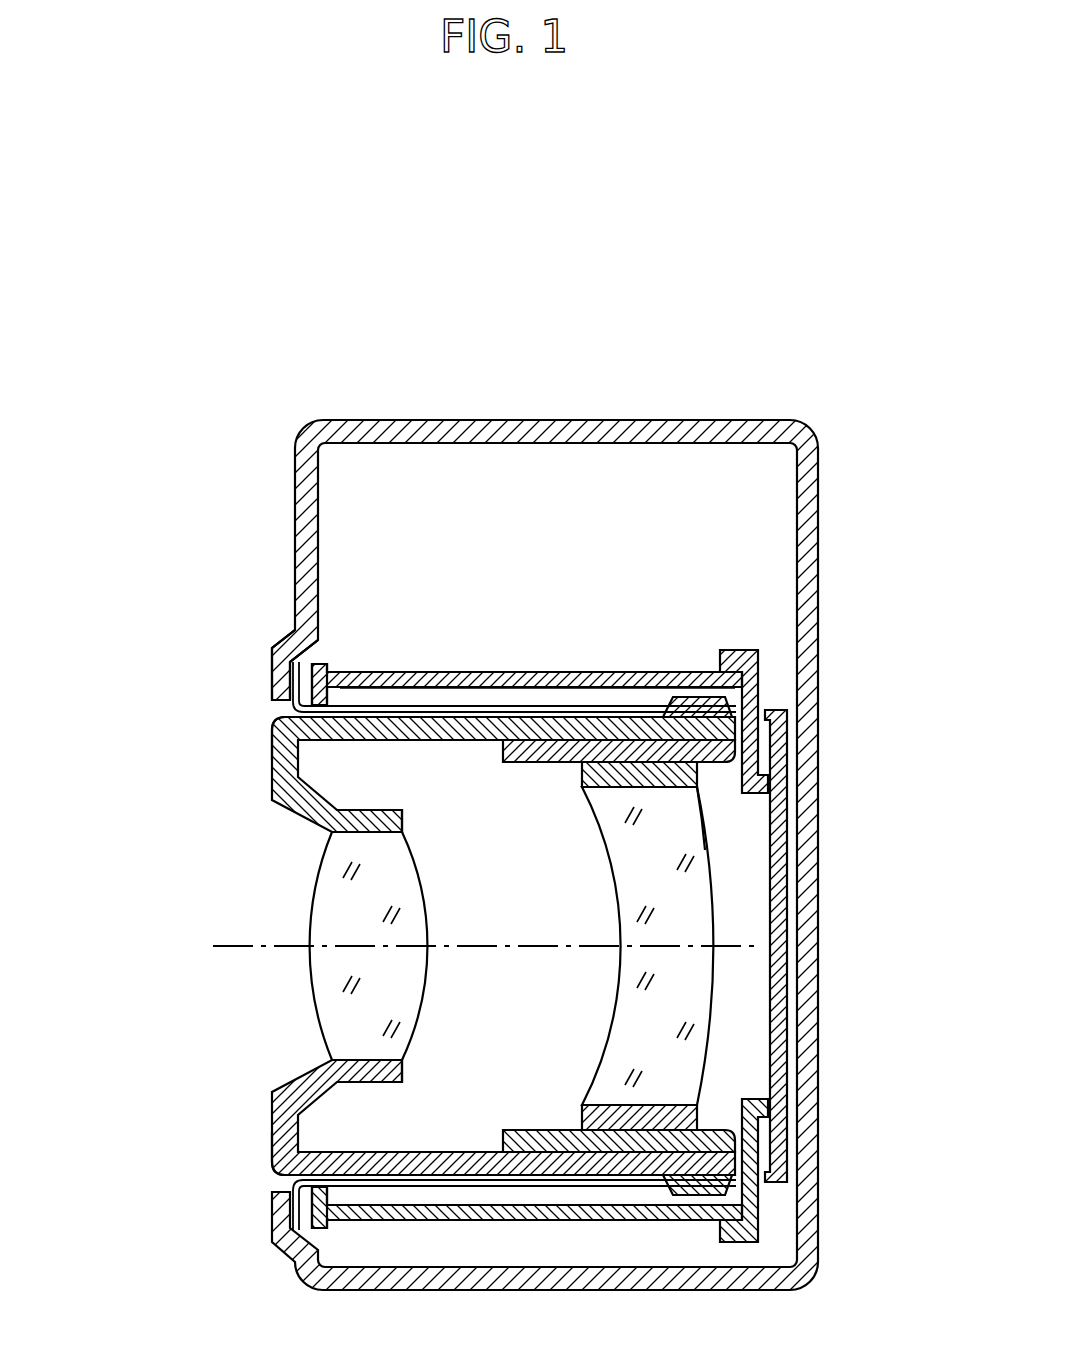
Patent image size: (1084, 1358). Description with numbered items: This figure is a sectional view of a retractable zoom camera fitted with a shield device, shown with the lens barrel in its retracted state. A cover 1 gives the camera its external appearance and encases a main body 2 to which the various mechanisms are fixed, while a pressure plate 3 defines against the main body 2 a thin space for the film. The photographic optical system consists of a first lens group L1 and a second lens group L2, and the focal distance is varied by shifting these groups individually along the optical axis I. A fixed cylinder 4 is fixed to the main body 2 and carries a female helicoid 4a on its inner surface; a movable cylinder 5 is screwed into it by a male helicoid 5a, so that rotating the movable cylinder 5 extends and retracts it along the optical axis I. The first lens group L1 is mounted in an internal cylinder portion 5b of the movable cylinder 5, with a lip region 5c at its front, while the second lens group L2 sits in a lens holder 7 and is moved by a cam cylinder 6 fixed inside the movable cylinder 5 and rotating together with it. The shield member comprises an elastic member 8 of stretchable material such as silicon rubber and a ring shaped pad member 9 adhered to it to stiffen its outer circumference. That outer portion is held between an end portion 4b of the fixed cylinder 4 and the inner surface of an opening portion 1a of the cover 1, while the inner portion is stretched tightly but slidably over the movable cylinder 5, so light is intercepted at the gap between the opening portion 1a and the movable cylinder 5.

The cover 1 is at (510, 427).
The opening portion 1a is at (270, 705).
The main body 2 is at (758, 676).
The pressure plate 3 is at (788, 812).
The fixed cylinder 4 is at (463, 688).
The female helicoid 4a is at (537, 696).
The end portion 4b is at (325, 663).
The movable cylinder 5 is at (273, 793).
The male helicoid 5a is at (693, 706).
The internal cylinder portion 5b is at (367, 810).
The flange lip of lens barrel 5c is at (273, 757).
The cam cylinder 6 is at (551, 765).
The lens holder 7 is at (705, 838).
The elastic member 8 is at (273, 712).
The pad member 9 is at (273, 673).
The first lens group L1 is at (333, 915).
The second lens group L2 is at (635, 1000).
The optical axis I is at (253, 950).